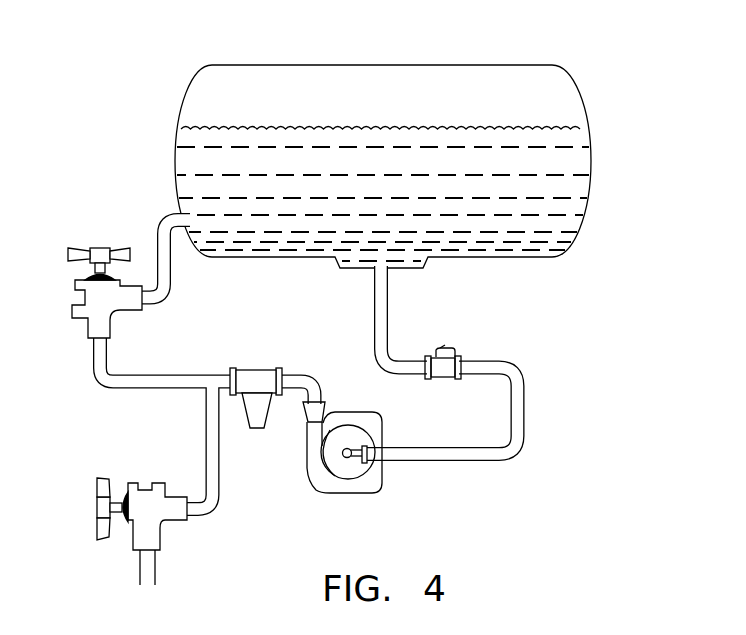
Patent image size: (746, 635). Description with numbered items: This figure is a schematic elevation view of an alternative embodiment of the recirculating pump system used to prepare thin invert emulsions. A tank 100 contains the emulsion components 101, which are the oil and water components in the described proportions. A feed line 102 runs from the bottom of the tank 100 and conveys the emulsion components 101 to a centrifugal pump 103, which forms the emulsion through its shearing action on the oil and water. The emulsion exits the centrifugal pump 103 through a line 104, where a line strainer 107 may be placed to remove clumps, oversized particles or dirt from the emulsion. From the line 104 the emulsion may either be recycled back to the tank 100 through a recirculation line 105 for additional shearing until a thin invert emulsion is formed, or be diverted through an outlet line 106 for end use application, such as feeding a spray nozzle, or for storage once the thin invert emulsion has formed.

The tank 100 is at (573, 92).
The emulsion components 101 is at (575, 172).
The feed line 102 is at (518, 410).
The centrifugal pump 103 is at (367, 492).
The line 104 is at (318, 371).
The recirculation line 105 is at (96, 386).
The outlet line 106 is at (204, 482).
The line strainer 107 is at (254, 430).